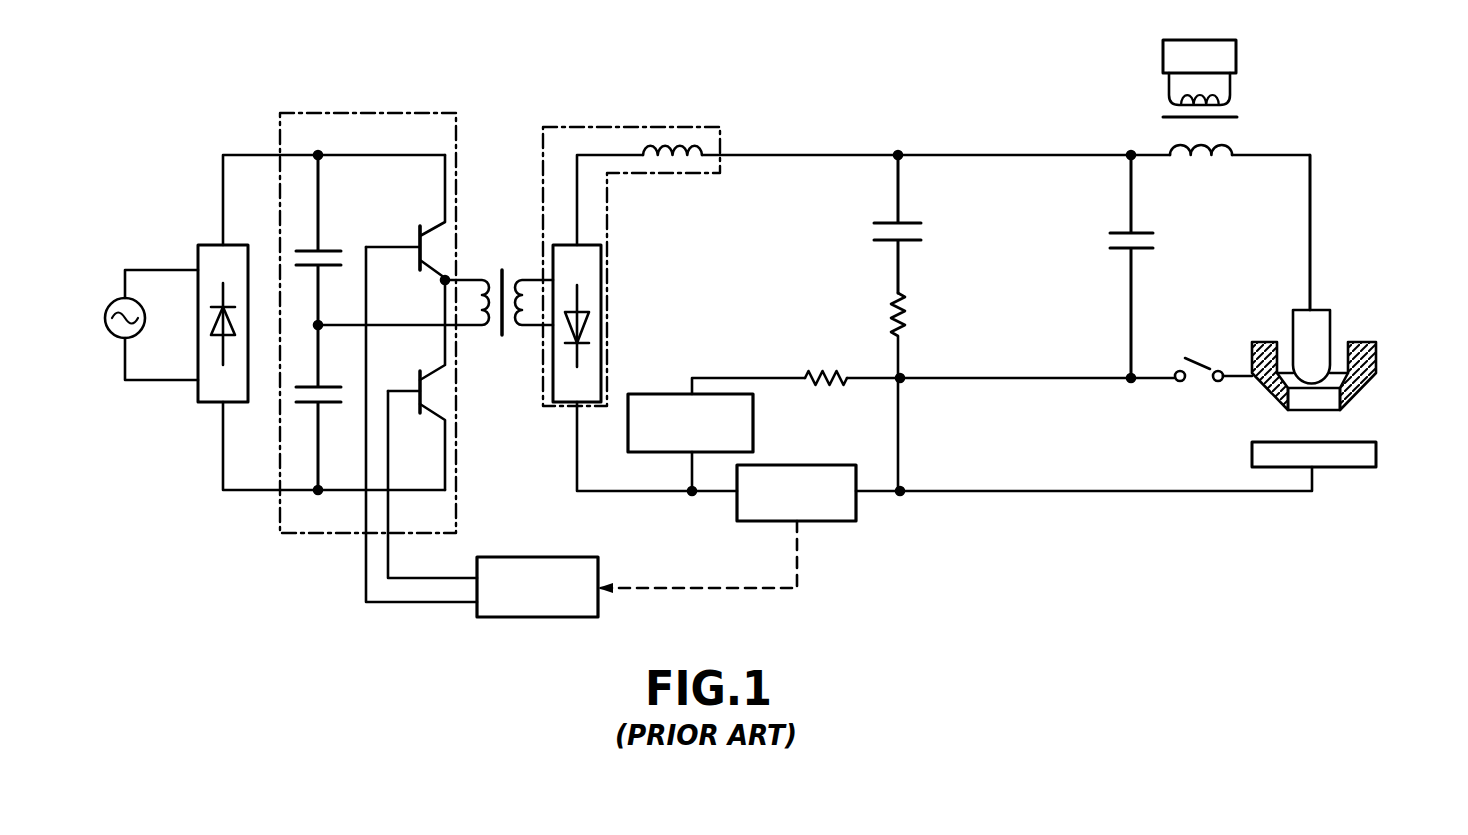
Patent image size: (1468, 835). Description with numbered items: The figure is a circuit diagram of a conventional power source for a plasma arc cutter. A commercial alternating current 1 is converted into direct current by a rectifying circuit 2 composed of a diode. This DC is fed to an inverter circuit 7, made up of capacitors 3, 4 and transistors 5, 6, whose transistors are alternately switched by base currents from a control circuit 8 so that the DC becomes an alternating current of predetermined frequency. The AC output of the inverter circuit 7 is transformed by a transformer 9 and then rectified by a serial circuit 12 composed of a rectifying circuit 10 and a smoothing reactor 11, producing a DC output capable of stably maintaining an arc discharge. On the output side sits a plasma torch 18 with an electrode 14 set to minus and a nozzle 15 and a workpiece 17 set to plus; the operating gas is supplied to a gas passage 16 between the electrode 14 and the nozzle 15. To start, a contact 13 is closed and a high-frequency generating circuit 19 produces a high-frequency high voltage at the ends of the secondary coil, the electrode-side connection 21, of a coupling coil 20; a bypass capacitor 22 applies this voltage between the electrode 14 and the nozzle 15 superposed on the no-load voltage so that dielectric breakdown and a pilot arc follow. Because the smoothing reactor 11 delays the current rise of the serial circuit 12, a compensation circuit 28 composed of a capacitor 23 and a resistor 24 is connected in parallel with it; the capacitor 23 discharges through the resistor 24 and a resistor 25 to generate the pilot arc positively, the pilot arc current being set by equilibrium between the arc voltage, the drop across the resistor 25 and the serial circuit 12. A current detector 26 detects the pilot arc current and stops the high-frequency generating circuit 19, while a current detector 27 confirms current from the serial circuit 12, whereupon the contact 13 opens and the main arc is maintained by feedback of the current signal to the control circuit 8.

The commercial alternating current 1 is at (103, 329).
The rectifying circuit 2 is at (196, 398).
The capacitor 3 is at (322, 250).
The capacitor 4 is at (300, 402).
The transistor 5 is at (440, 240).
The transistor 6 is at (445, 398).
The inverter circuit 7 is at (342, 112).
The control circuit 8 is at (557, 557).
The transformer 9 is at (503, 337).
The rectifying circuit 10 is at (603, 286).
The smoothing reactor 11 is at (670, 133).
The serial circuit 12 is at (598, 127).
The contact 13 is at (1198, 358).
The electrode 14 is at (1292, 312).
The nozzle 15 is at (1365, 345).
The gas passage 16 is at (1330, 315).
The workpiece 17 is at (1350, 468).
The plasma torch 18 is at (1358, 329).
The high-frequency generating circuit 19 is at (1238, 57).
The coupling coil 20 is at (1237, 117).
The electrode-side connection 21 is at (1147, 150).
The bypass capacitor 22 is at (1158, 232).
The capacitor 23 is at (912, 222).
The resistor 24 is at (905, 298).
The resistor 25 is at (822, 372).
The current detector 26 is at (757, 437).
The current detector 27 is at (858, 500).
The compensation circuit 28 is at (933, 323).